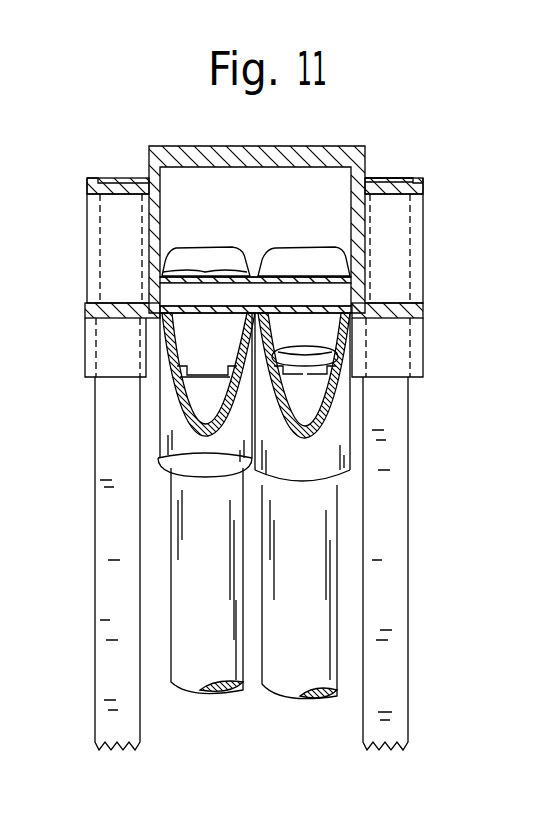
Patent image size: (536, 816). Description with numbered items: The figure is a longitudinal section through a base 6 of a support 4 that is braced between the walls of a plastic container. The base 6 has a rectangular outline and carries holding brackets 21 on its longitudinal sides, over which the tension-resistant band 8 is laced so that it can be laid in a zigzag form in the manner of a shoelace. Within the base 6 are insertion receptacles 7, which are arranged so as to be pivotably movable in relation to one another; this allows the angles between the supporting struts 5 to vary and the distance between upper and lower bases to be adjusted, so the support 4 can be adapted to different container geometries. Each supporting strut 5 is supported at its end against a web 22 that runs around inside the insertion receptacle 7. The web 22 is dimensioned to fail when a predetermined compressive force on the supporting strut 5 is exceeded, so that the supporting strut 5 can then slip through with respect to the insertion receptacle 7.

The support 4 is at (443, 267).
The supporting strut 5 is at (310, 658).
The base 6 is at (183, 155).
The insertion receptacle 7 is at (332, 448).
The tension-resistant band 8 is at (395, 527).
The holding bracket 21 is at (395, 182).
The web 22 is at (313, 345).